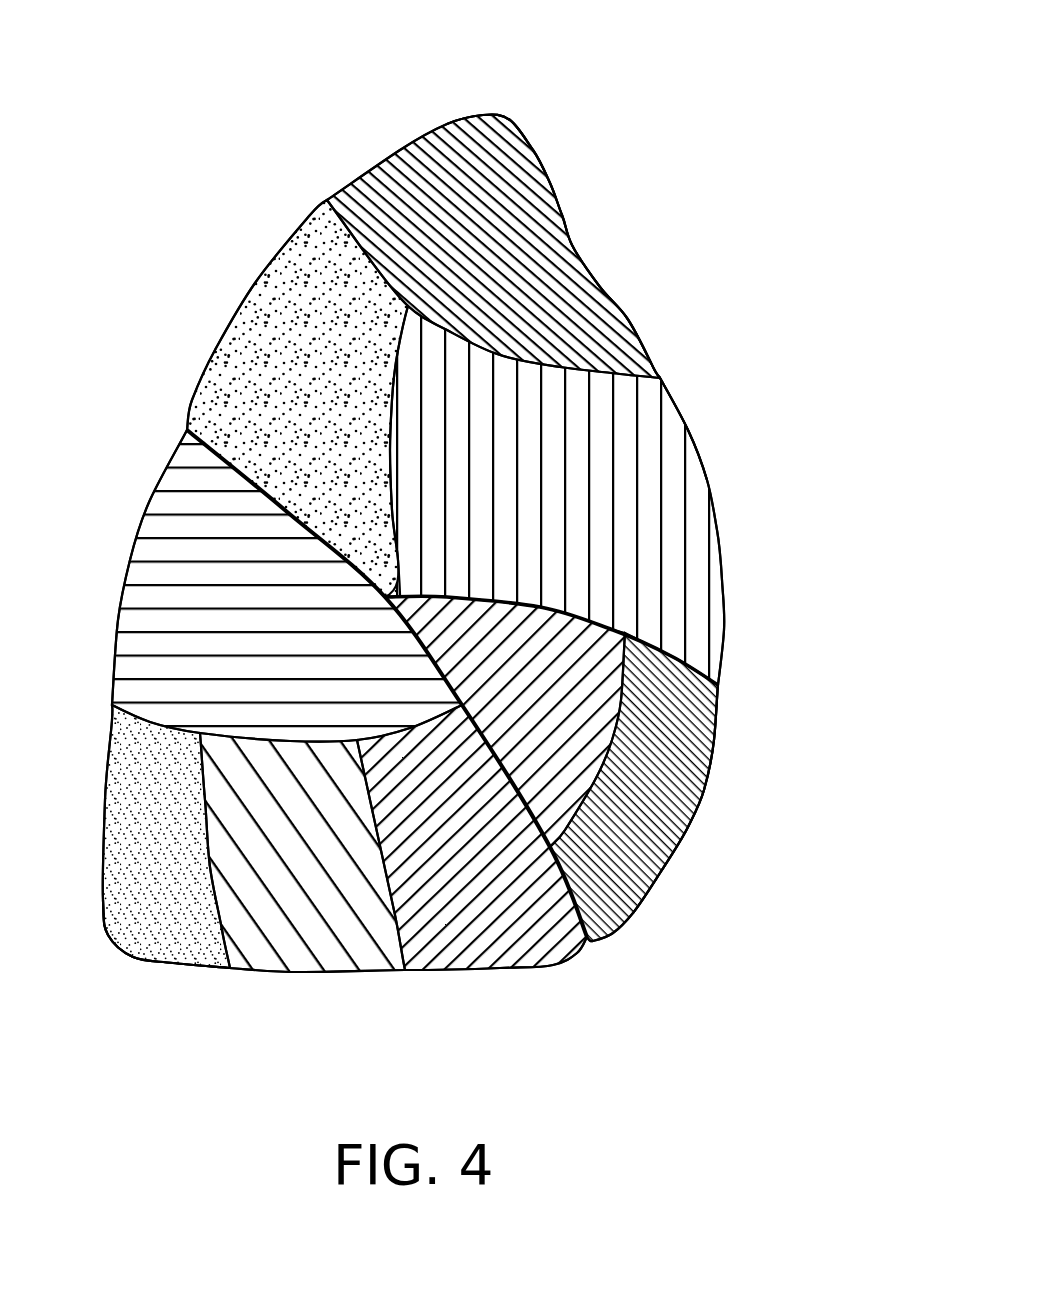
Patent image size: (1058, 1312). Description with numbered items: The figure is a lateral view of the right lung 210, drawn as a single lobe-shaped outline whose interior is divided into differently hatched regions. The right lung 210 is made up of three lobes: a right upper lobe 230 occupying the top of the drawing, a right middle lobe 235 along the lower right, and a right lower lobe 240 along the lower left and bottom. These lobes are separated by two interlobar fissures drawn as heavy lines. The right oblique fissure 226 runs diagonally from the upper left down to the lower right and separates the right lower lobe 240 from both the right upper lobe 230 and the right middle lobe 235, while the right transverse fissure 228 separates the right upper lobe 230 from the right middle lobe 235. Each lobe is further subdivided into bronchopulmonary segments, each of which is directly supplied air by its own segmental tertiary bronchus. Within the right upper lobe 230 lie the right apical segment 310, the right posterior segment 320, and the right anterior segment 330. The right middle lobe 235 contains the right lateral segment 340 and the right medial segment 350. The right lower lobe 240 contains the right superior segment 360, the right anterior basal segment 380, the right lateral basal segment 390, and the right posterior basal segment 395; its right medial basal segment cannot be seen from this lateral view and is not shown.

The right lung 210 is at (590, 74).
The right oblique fissure 226 is at (195, 447).
The right transverse fissure 228 is at (673, 660).
The right upper lobe 230 is at (630, 316).
The right middle lobe 235 is at (697, 813).
The right lower lobe 240 is at (172, 962).
The right apical segment 310 is at (493, 246).
The right posterior segment 320 is at (297, 398).
The right anterior segment 330 is at (554, 495).
The right lateral segment 340 is at (505, 721).
The right medial segment 350 is at (634, 787).
The right superior segment 360 is at (287, 586).
The right anterior basal segment 380 is at (472, 837).
The right lateral basal segment 390 is at (302, 852).
The right posterior basal segment 395 is at (166, 836).